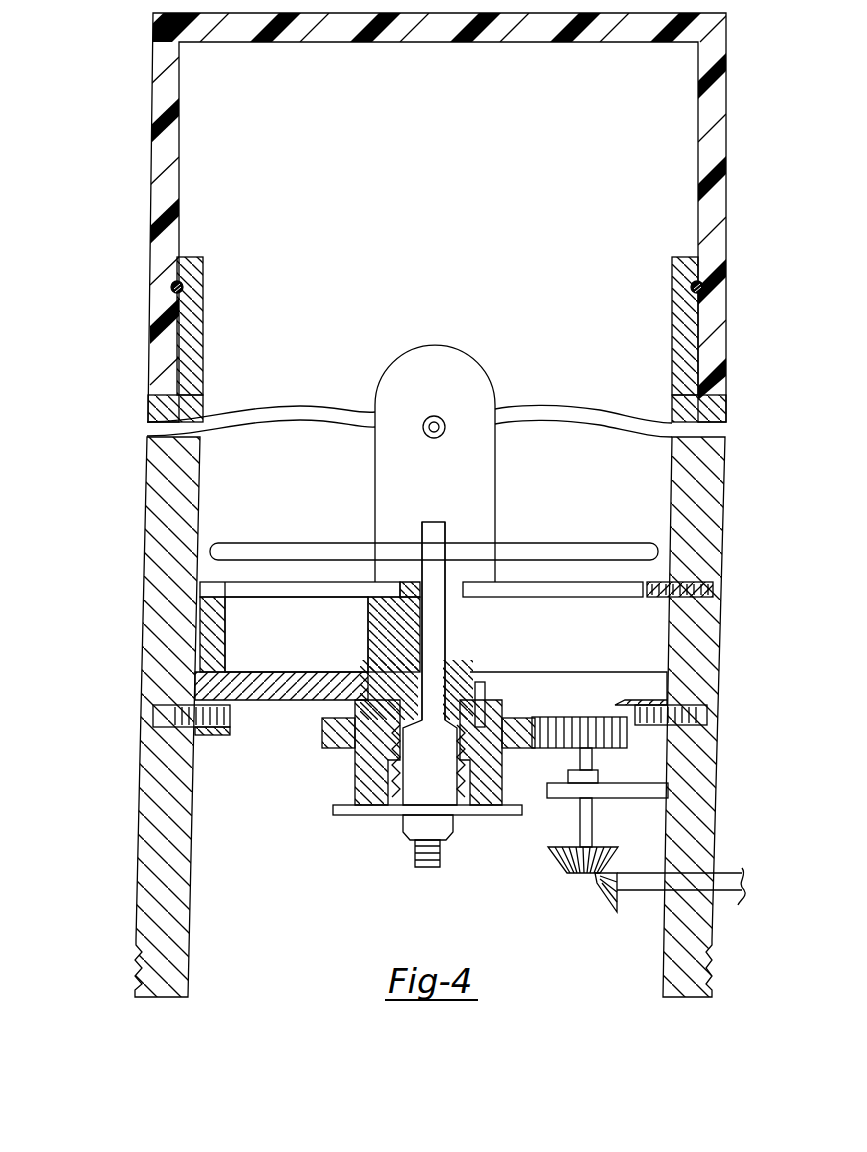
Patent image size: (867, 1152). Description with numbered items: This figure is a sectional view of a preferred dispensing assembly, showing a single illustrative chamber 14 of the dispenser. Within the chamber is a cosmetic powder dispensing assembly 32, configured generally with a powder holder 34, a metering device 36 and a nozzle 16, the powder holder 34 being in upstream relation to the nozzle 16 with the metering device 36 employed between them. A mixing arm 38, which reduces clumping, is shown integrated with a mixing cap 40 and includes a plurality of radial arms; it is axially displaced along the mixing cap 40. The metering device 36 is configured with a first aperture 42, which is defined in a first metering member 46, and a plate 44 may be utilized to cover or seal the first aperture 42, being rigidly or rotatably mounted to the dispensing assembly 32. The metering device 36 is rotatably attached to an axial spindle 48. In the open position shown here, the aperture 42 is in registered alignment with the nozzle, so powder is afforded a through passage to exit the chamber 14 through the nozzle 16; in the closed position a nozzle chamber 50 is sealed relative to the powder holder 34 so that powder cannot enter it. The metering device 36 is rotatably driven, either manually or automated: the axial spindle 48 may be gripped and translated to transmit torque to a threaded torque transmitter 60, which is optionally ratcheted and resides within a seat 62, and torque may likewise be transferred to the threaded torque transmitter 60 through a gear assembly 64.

The chamber 14 is at (722, 535).
The nozzle 16 is at (255, 698).
The cosmetic powder dispensing assembly 32 is at (90, 206).
The powder holder 34 is at (672, 352).
The metering device 36 is at (322, 584).
The mixing arm 38 is at (445, 426).
The mixing cap 40 is at (446, 388).
The first aperture 42 is at (303, 637).
The plate 44 is at (212, 582).
The first metering member 46 is at (205, 632).
The axial spindle 48 is at (445, 640).
The nozzle chamber 50 is at (285, 695).
The threaded torque transmitter 60 is at (515, 737).
The seat 62 is at (351, 730).
The gear assembly 64 is at (578, 888).